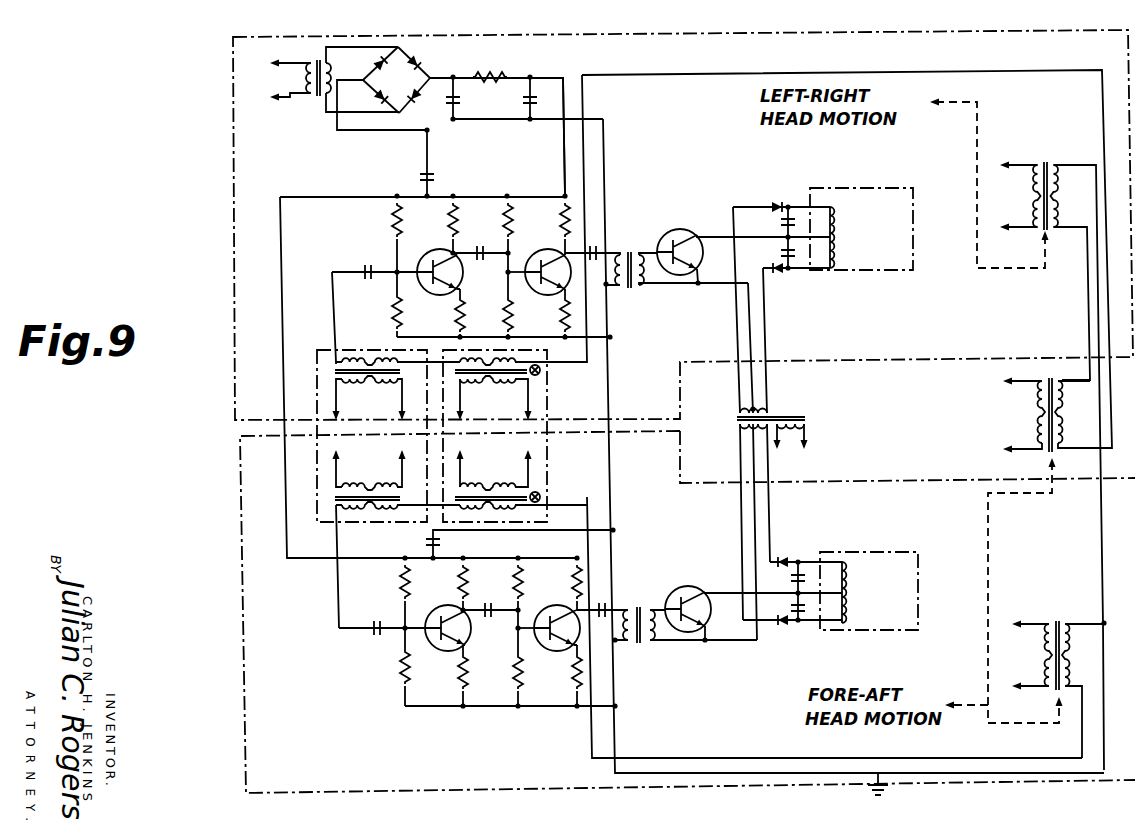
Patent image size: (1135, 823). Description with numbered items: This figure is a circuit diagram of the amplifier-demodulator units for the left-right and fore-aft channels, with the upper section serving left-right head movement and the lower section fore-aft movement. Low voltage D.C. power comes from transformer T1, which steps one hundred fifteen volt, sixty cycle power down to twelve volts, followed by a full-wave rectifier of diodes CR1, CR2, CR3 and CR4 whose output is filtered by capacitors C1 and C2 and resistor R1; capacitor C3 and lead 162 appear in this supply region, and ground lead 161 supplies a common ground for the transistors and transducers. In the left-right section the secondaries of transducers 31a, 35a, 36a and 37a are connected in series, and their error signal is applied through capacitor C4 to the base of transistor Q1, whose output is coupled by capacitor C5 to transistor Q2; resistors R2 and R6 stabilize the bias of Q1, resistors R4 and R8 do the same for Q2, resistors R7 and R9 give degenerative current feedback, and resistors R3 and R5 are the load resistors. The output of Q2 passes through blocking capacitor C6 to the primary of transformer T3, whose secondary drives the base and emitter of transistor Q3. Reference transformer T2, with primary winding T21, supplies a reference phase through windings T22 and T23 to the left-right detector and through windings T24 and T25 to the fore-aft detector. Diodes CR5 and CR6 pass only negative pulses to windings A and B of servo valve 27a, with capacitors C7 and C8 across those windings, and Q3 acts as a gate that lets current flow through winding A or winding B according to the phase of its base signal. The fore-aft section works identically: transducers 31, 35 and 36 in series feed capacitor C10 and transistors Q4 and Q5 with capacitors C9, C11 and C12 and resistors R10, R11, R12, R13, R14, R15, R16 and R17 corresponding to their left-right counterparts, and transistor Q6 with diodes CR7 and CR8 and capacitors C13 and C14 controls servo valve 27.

The power transformer T1 is at (334, 83).
The rectifier diode CR1 is at (424, 62).
The rectifier diode CR2 is at (372, 63).
The rectifier diode CR3 is at (370, 96).
The rectifier diode CR4 is at (419, 98).
The filter resistor R1 is at (490, 69).
The filter capacitor C1 is at (464, 97).
The filter capacitor C2 is at (541, 97).
The capacitor C3 is at (441, 178).
The ground lead 161 is at (561, 172).
The conductor 162 is at (606, 179).
The bias stabilization resistor R2 is at (382, 237).
The load resistor R3 is at (440, 228).
The bias stabilization resistor R4 is at (494, 250).
The load resistor R5 is at (552, 228).
The bias stabilization resistor R6 is at (383, 304).
The feedback resistor R7 is at (446, 314).
The bias stabilization resistor R8 is at (499, 317).
The feedback resistor R9 is at (555, 314).
The coupling capacitor C4 is at (374, 281).
The coupling capacitor C5 is at (480, 264).
The blocking capacitor C6 is at (592, 244).
The transistor Q1 is at (436, 278).
The transistor Q2 is at (548, 278).
The transistor Q3 is at (743, 266).
The transformer T3 is at (675, 261).
The diode CR5 is at (781, 198).
The diode CR6 is at (796, 275).
The capacitor C7 is at (771, 223).
The capacitor C8 is at (771, 252).
The servo valve 27a is at (862, 270).
The transducer 35a is at (397, 389).
The micropositioner transducer 31a is at (497, 389).
The transducer 35 is at (397, 479).
The transducer 31 is at (521, 479).
The reference transformer T2 is at (755, 507).
The primary winding T21 is at (791, 447).
The secondary winding T22 is at (741, 402).
The secondary winding T23 is at (768, 398).
The secondary winding T24 is at (745, 432).
The secondary winding T25 is at (760, 443).
The capacitor C9 is at (414, 544).
The capacitor C10 is at (382, 638).
The capacitor C11 is at (490, 619).
The capacitor C12 is at (602, 600).
The resistor R10 is at (388, 591).
The resistor R11 is at (449, 582).
The resistor R12 is at (505, 605).
The resistor R13 is at (561, 582).
The resistor R14 is at (389, 667).
The resistor R15 is at (449, 677).
The resistor R16 is at (506, 682).
The resistor R17 is at (563, 677).
The transistor Q4 is at (448, 635).
The transistor Q5 is at (556, 635).
The transistor Q6 is at (753, 624).
The diode CR7 is at (806, 554).
The diode CR8 is at (792, 629).
The capacitor C13 is at (782, 579).
The capacitor C14 is at (784, 606).
The servo valve 27 is at (862, 630).
The transducer 36a is at (1048, 466).
The transducer 37a is at (1048, 415).
The transducer 36 is at (1056, 689).